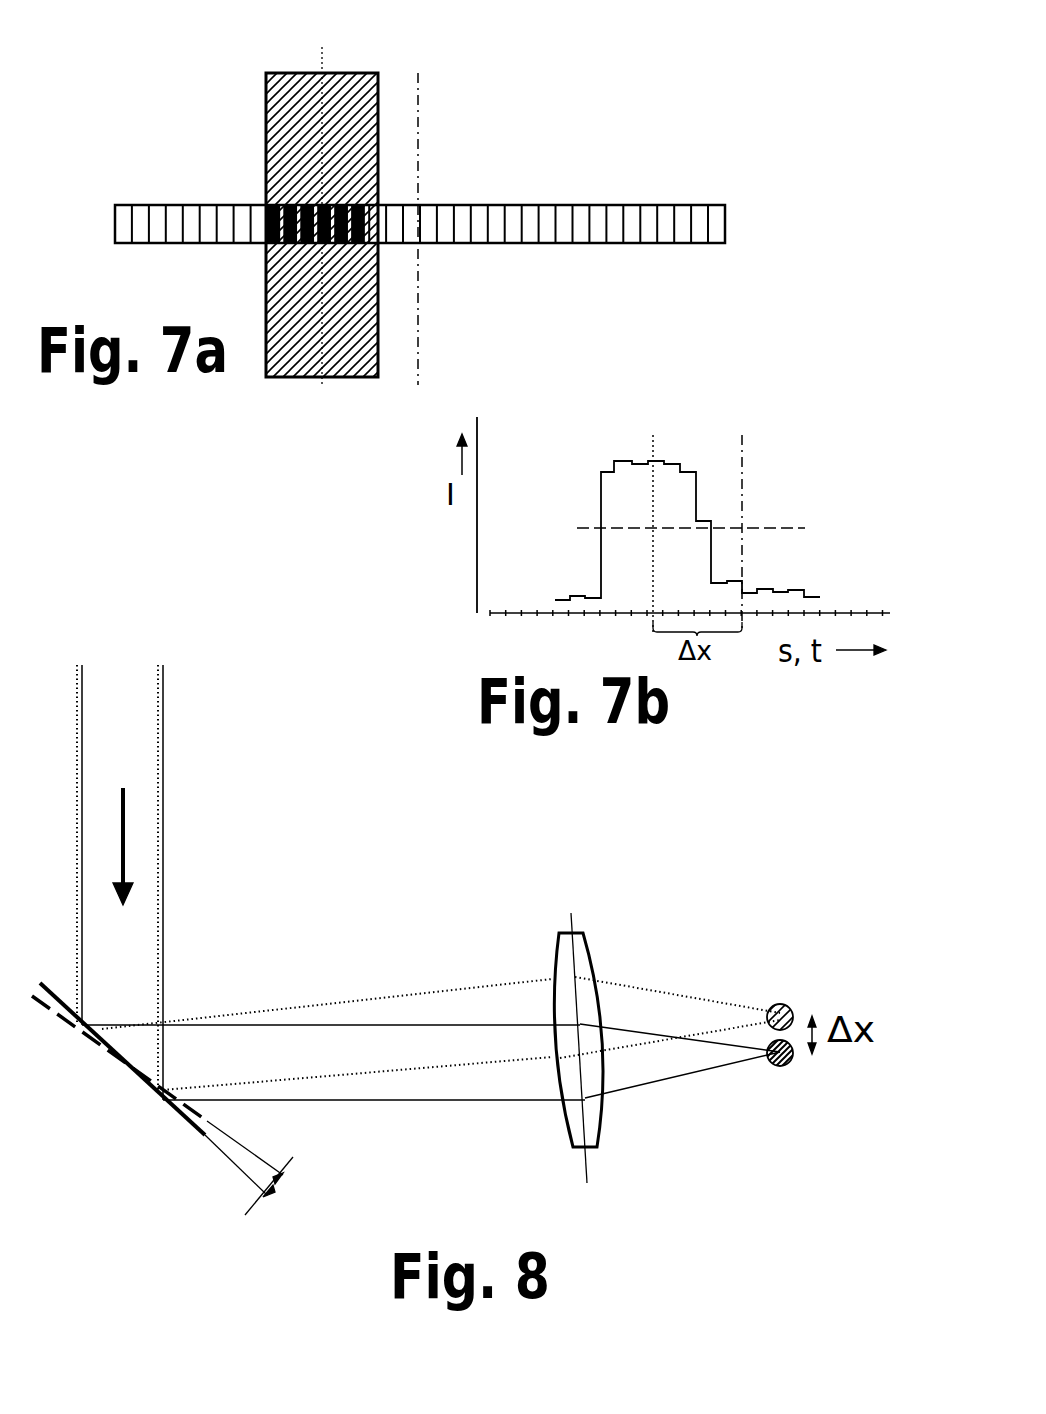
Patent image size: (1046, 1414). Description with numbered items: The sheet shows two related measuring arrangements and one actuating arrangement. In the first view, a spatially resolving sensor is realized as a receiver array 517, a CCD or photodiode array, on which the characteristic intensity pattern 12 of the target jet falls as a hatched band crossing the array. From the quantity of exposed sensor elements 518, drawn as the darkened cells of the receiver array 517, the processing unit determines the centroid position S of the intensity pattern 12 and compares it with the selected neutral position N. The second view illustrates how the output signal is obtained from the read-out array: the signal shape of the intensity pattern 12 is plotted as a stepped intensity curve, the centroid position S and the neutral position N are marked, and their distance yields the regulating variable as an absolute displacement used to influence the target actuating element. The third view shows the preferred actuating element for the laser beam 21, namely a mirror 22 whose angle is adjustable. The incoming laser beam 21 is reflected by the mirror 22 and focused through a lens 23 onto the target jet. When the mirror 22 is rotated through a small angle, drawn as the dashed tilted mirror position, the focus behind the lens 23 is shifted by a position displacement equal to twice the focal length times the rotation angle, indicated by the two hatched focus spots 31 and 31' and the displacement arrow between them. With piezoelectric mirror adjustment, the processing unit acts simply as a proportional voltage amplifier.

In FIG. 7A, the intensity pattern 12 is at (348, 74).
In FIG. 7B, the intensity pattern 12 is at (607, 472).
In FIG. 7A, the receiver array 517 is at (528, 213).
In FIG. 7A, the exposed sensor elements 518 is at (277, 200).
In FIG. 7A, the centroid position S is at (322, 57).
In FIG. 7B, the centroid position S is at (653, 448).
In FIG. 7A, the neutral position N is at (420, 100).
In FIG. 7B, the neutral position N is at (742, 480).
In FIG. 8, the laser beam 21 is at (164, 918).
In FIG. 8, the mirror 22 is at (122, 1063).
In FIG. 8, the lens 23 is at (577, 943).
In FIG. 8, the light spot 31 is at (830, 1140).
In FIG. 8, the displaced light spot 31' is at (828, 929).